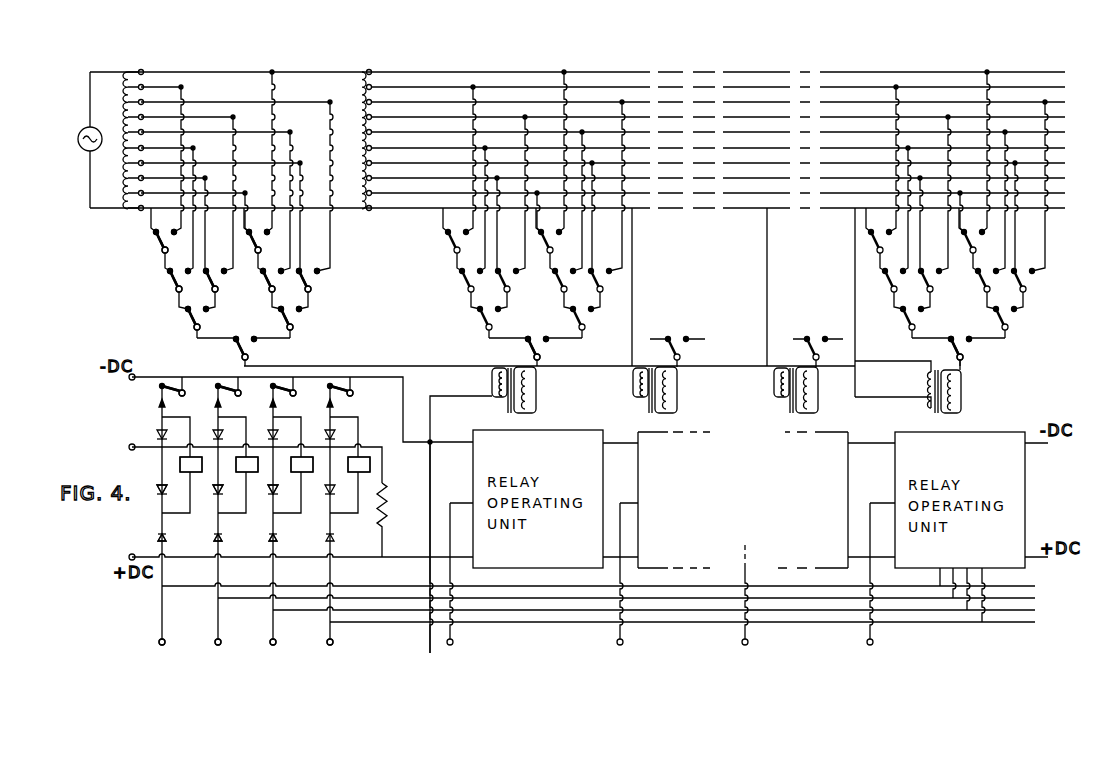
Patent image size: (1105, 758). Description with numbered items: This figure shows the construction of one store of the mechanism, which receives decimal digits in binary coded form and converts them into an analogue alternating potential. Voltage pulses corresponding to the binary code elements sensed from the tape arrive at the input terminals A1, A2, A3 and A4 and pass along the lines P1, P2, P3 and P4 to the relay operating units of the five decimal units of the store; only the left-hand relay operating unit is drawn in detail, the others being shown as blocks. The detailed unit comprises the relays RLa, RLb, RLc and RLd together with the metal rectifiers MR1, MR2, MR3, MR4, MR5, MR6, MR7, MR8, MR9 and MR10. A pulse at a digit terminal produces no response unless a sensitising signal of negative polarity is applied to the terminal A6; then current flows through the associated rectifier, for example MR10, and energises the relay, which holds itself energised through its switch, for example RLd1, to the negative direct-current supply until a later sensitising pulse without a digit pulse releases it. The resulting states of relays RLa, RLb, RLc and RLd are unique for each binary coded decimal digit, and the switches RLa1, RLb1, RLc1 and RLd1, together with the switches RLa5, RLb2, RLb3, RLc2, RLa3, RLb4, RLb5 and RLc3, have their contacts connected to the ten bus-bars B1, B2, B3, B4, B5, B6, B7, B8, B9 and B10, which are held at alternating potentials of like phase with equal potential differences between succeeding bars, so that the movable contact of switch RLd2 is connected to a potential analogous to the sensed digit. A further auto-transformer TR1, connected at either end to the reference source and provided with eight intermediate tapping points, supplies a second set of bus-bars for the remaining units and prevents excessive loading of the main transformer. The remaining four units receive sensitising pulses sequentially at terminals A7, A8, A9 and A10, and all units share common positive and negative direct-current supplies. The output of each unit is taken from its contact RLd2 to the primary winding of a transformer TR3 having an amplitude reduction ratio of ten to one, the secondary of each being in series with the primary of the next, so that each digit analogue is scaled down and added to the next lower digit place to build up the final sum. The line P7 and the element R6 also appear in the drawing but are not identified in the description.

The bus-bar B1 is at (141, 211).
The bus-bar B2 is at (139, 195).
The bus-bar B3 is at (137, 179).
The bus-bar B4 is at (137, 164).
The bus-bar B5 is at (137, 149).
The bus-bar B6 is at (137, 131).
The bus-bar B7 is at (137, 117).
The bus-bar B8 is at (146, 102).
The bus-bar B9 is at (145, 87).
The bus-bar B10 is at (144, 72).
The further auto-transformer TR1 is at (254, 153).
The transformer TR3 is at (908, 396).
The relay switch RLa5 is at (160, 240).
The relay switch RLb2 is at (180, 264).
The relay switch RLb3 is at (206, 274).
The relay switch RLc2 is at (192, 309).
The relay switch RLd2 is at (601, 344).
The relay switch RLa3 is at (264, 226).
The relay switch RLb4 is at (274, 263).
The relay switch RLb5 is at (312, 273).
The relay switch RLc3 is at (295, 310).
The relay switch RLa1 is at (177, 388).
The relay switch RLb1 is at (236, 389).
The relay switch RLc1 is at (294, 389).
The relay switch RLd1 is at (352, 389).
The relay RLa is at (182, 472).
The relay RLb is at (238, 472).
The relay RLc is at (293, 472).
The relay RLd is at (350, 472).
The metal rectifier MR1 is at (167, 432).
The metal rectifier MR2 is at (167, 495).
The metal rectifier MR3 is at (165, 538).
The metal rectifier MR4 is at (223, 432).
The metal rectifier MR5 is at (223, 495).
The metal rectifier MR6 is at (221, 538).
The metal rectifier MR7 is at (278, 432).
The metal rectifier MR8 is at (278, 495).
The metal rectifier MR9 is at (276, 538).
The metal rectifier MR10 is at (335, 432).
The resistor R6 is at (443, 546).
The supply line P7 is at (549, 302).
The input terminal A1 is at (164, 653).
The input terminal A2 is at (220, 653).
The input terminal A3 is at (275, 653).
The input terminal A4 is at (332, 653).
The sensitising terminal A6 is at (242, 460).
The sensitising terminal A7 is at (456, 585).
The sensitising terminal A8 is at (624, 585).
The sensitising terminal A9 is at (747, 606).
The sensitising terminal A10 is at (876, 585).
The line P1 is at (403, 623).
The line P2 is at (528, 611).
The line P3 is at (585, 599).
The line P4 is at (697, 587).